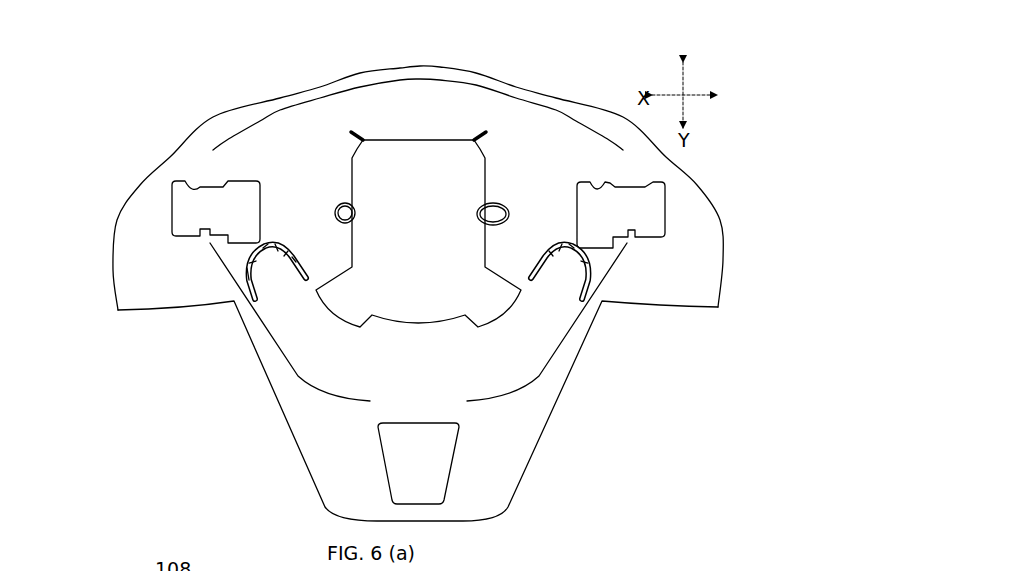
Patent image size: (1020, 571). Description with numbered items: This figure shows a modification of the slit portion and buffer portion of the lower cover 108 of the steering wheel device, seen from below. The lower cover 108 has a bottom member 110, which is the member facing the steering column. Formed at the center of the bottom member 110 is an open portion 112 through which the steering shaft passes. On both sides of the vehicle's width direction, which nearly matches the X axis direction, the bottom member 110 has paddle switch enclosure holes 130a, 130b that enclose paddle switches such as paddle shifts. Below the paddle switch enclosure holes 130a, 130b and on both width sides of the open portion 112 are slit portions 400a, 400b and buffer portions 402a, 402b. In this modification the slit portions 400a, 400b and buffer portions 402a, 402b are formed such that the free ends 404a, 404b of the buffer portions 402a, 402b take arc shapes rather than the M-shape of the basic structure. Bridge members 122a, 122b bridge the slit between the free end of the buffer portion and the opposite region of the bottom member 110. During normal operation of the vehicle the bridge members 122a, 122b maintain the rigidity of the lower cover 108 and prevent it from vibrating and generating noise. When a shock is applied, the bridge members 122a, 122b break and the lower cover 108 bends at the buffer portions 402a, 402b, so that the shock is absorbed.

The lower cover 108 is at (194, 111).
The bottom member 110 is at (272, 128).
The open portion 112 is at (353, 250).
The paddle switch enclosure hole 130a is at (192, 190).
The paddle switch enclosure hole 130b is at (588, 178).
The slit portion 400a is at (294, 262).
The slit portion 400b is at (544, 262).
The buffer portion 402a is at (250, 294).
The buffer portion 402b is at (589, 294).
The free end 404a is at (268, 243).
The free end 404b is at (573, 245).
The bridge member 122a is at (270, 264).
The bridge member 122b is at (246, 268).